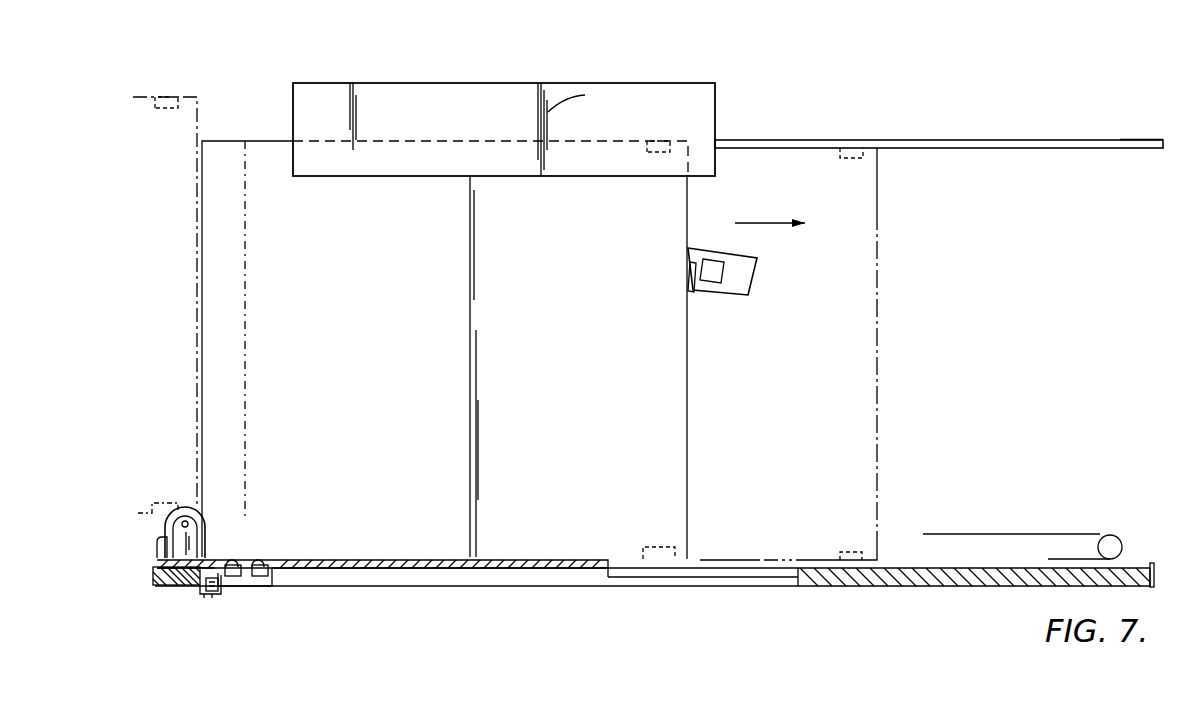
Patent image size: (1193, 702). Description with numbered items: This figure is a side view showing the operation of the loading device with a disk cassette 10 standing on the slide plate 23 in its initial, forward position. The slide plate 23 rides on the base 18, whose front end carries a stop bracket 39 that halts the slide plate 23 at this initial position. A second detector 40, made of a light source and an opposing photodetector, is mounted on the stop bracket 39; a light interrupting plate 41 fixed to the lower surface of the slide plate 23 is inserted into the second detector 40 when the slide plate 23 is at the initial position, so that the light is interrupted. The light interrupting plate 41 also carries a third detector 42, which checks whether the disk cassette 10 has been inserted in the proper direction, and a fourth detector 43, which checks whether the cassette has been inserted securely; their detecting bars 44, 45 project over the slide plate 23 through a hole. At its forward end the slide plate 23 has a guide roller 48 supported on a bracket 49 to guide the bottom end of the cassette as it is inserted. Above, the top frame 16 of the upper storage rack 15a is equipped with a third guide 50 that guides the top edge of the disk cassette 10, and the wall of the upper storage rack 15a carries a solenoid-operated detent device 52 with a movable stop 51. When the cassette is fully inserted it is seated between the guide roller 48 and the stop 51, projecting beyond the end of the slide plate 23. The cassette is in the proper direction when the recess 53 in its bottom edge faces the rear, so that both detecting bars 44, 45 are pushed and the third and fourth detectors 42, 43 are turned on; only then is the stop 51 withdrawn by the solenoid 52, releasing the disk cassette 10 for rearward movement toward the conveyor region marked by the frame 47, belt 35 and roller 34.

The disk cassette 10 is at (200, 102).
The upper storage rack 15a is at (987, 141).
The top frame 16 is at (910, 140).
The base 18 is at (951, 580).
The slide plate 23 is at (571, 559).
The roller 34 is at (1098, 538).
The conveyor belt 35 is at (1005, 534).
The stop bracket 39 is at (153, 577).
The second detector 40 is at (221, 597).
The light interrupting plate 41 is at (223, 589).
The third detector 42 is at (233, 580).
The fourth detector 43 is at (272, 578).
The detecting bar 44 is at (231, 559).
The detecting bar 45 is at (259, 559).
The frame 47 is at (776, 578).
The guide roller 48 is at (204, 521).
The bracket 49 is at (158, 552).
The third guide 50 is at (626, 94).
The movable stop 51 is at (693, 296).
The solenoid-operated detent device 52 is at (746, 278).
The recess 53 is at (166, 97).